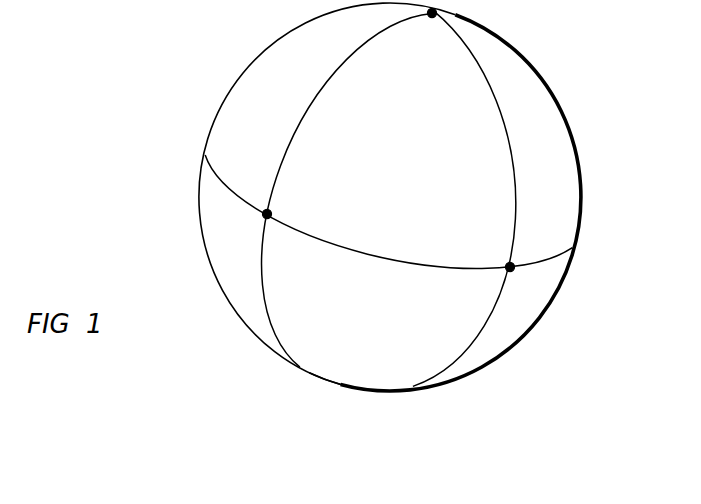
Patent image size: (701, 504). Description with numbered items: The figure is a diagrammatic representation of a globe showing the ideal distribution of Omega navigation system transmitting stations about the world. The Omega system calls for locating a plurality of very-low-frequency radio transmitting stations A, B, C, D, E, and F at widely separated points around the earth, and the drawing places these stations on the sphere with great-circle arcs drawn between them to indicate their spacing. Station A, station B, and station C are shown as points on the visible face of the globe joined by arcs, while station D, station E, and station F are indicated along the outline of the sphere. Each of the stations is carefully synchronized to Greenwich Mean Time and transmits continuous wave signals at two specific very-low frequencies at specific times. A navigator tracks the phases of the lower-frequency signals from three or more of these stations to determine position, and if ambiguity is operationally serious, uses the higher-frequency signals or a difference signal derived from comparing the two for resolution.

The very-low-frequency radio transmitting station A is at (428, 28).
The very-low-frequency radio transmitting station B is at (273, 231).
The very-low-frequency radio transmitting station C is at (517, 278).
The very-low-frequency radio transmitting station D is at (240, 64).
The very-low-frequency radio transmitting station E is at (587, 149).
The very-low-frequency radio transmitting station F is at (338, 394).